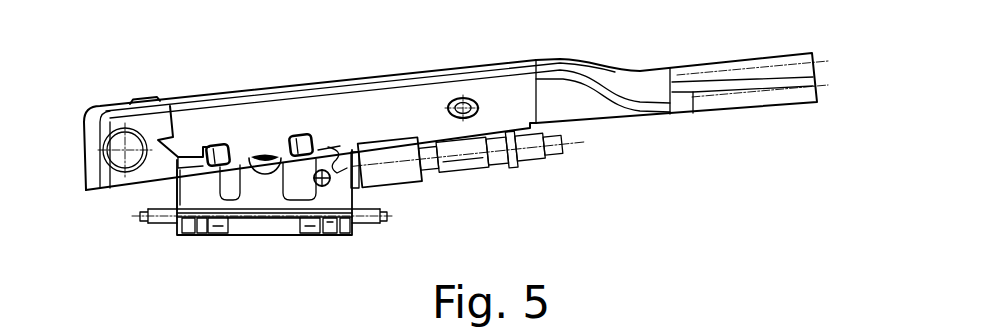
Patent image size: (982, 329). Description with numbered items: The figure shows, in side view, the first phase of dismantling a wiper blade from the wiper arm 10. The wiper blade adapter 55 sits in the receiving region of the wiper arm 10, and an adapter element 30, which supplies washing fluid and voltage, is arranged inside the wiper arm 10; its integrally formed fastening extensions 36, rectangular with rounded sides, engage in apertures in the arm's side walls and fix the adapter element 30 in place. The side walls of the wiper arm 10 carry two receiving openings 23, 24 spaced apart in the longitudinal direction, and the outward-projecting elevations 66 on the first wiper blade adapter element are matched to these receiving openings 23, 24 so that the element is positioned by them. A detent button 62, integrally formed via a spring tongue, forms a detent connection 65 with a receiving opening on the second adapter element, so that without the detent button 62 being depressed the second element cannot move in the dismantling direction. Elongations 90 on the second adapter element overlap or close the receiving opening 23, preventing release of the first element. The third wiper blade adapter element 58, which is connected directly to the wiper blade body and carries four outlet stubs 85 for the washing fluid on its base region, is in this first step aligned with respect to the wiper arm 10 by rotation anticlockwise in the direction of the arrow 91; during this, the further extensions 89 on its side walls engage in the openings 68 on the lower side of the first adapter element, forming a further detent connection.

The wiper arm 10 is at (648, 60).
The receiving opening 23 is at (205, 150).
The receiving opening 24 is at (318, 147).
The adapter element 30 is at (484, 178).
The fastening extensions 36 is at (462, 99).
The wiper blade adapter 55 is at (222, 248).
The third wiper blade adapter element 58 is at (243, 232).
The detent button 62 is at (145, 99).
The detent connection 65 is at (108, 91).
The elevations 66 is at (213, 150).
The further opening 68 is at (355, 167).
The outlet stubs 85 is at (363, 224).
The further extensions 89 is at (327, 190).
The elongations 90 is at (178, 198).
The arrow 91 is at (261, 192).